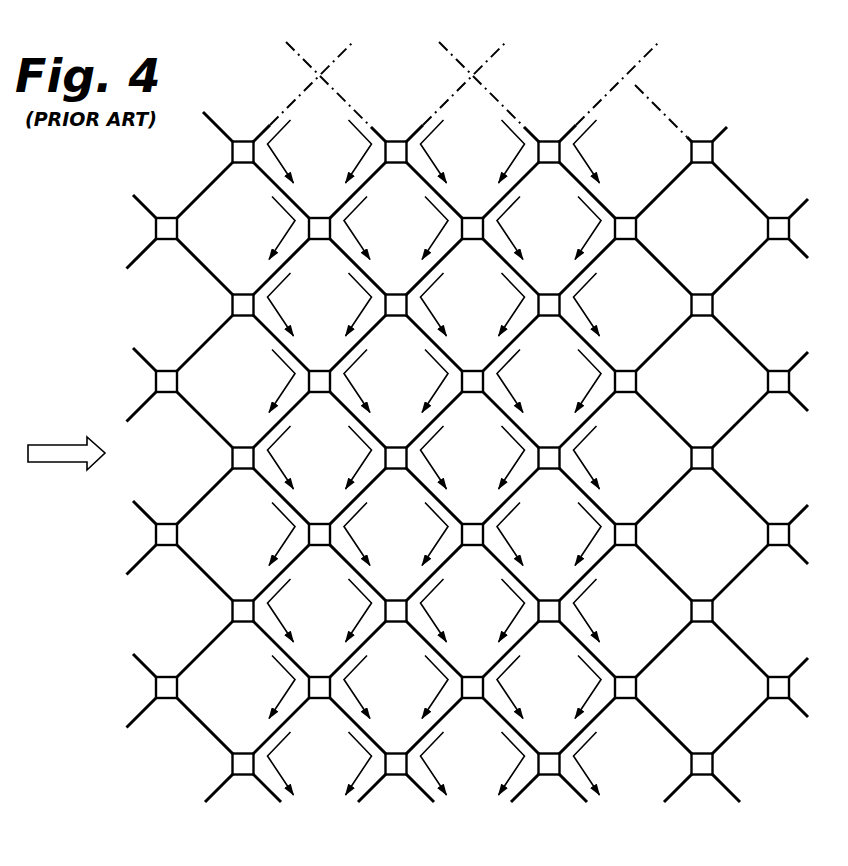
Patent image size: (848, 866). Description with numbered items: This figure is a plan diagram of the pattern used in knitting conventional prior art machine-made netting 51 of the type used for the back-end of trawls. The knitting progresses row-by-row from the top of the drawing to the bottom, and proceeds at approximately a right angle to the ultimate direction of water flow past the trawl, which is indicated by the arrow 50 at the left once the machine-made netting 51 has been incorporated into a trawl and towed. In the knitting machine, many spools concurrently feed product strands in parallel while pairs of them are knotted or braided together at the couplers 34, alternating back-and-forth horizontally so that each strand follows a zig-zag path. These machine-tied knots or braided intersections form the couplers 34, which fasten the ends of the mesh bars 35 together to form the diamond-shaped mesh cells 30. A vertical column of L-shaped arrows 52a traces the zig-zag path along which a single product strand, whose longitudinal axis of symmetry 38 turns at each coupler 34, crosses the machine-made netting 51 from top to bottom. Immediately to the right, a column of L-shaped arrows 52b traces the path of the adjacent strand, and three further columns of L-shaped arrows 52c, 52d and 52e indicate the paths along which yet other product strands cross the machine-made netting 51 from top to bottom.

The mesh cell 30 is at (447, 403).
The coupler 34 is at (157, 233).
The mesh bar 35 is at (220, 172).
The longitudinal axis of symmetry 38 is at (326, 44).
The arrow 50 is at (48, 445).
The machine-made netting 51 is at (103, 210).
The L-shaped arrows 52a is at (279, 457).
The L-shaped arrows 52b is at (357, 457).
The L-shaped arrows 52c is at (434, 457).
The L-shaped arrows 52d is at (510, 457).
The L-shaped arrows 52e is at (589, 457).